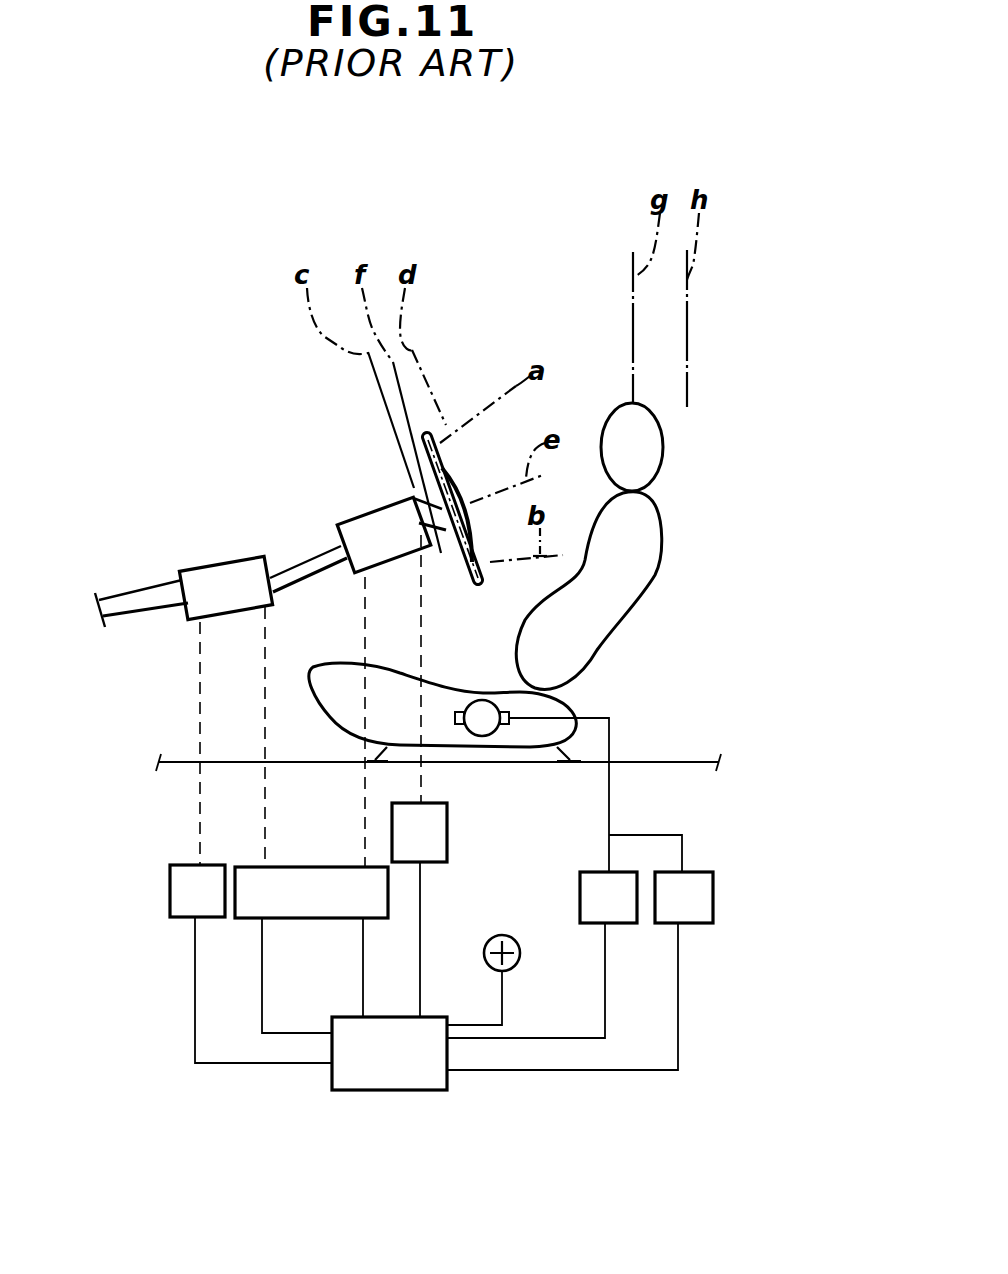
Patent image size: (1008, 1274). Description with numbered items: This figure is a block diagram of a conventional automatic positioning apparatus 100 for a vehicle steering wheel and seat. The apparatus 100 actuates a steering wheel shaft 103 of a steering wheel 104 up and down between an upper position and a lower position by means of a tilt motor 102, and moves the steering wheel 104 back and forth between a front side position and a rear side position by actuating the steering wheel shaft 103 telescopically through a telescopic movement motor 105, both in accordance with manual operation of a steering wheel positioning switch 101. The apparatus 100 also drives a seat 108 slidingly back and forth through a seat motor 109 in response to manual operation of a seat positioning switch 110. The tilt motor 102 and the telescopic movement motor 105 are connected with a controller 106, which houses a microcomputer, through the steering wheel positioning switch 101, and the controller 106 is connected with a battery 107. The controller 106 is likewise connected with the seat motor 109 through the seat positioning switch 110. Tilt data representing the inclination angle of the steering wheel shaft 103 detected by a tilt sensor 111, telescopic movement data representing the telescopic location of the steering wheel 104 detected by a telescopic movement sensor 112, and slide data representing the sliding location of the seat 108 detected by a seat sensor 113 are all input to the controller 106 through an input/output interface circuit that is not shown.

The automatic positioning apparatus 100 is at (222, 402).
The steering wheel positioning switch 101 is at (307, 919).
The tilt motor 102 is at (207, 568).
The steering wheel shaft 103 is at (428, 493).
The steering wheel 104 is at (427, 437).
The telescopic movement motor 105 is at (343, 522).
The controller 106 is at (353, 1091).
The battery 107 is at (508, 968).
The seat 108 is at (653, 573).
The seat motor 109 is at (478, 699).
The seat positioning switch 110 is at (578, 910).
The tilt sensor 111 is at (180, 918).
The telescopic movement sensor 112 is at (447, 831).
The seat sensor 113 is at (653, 915).